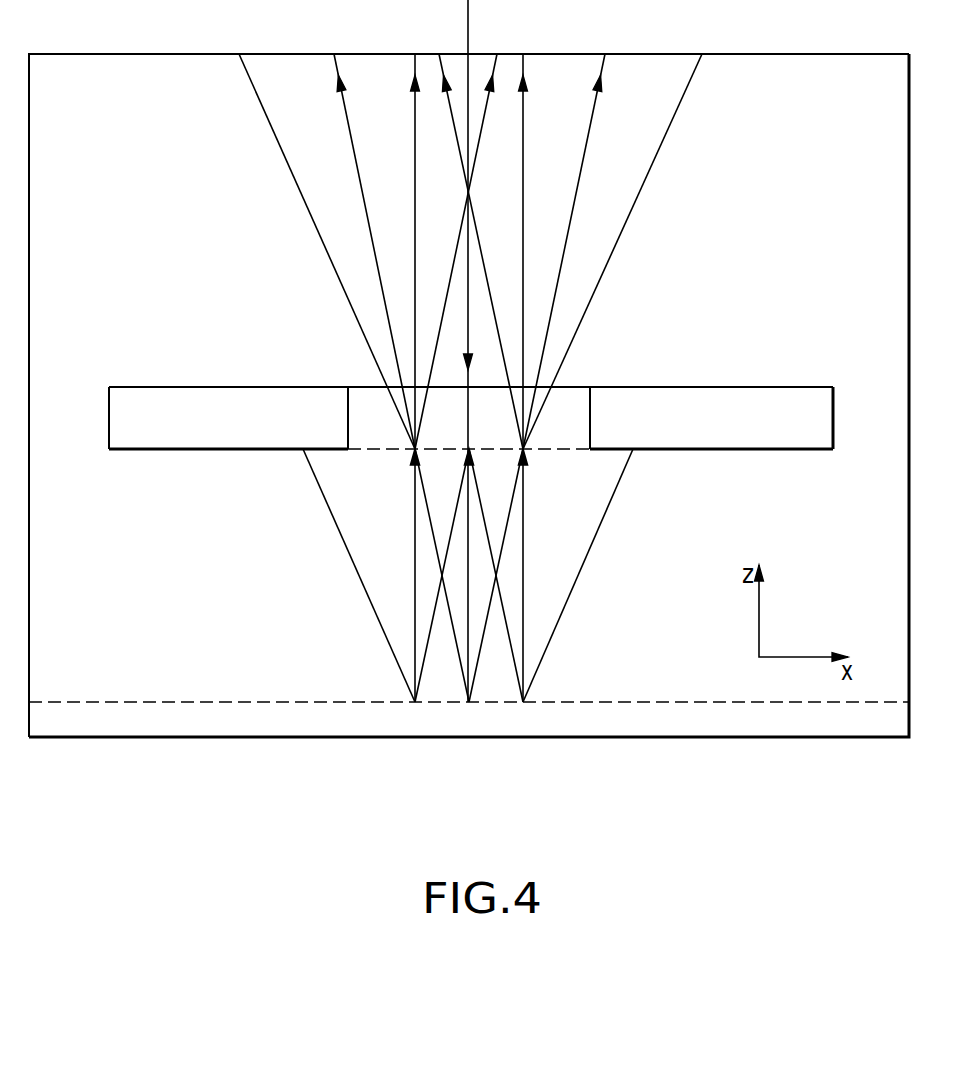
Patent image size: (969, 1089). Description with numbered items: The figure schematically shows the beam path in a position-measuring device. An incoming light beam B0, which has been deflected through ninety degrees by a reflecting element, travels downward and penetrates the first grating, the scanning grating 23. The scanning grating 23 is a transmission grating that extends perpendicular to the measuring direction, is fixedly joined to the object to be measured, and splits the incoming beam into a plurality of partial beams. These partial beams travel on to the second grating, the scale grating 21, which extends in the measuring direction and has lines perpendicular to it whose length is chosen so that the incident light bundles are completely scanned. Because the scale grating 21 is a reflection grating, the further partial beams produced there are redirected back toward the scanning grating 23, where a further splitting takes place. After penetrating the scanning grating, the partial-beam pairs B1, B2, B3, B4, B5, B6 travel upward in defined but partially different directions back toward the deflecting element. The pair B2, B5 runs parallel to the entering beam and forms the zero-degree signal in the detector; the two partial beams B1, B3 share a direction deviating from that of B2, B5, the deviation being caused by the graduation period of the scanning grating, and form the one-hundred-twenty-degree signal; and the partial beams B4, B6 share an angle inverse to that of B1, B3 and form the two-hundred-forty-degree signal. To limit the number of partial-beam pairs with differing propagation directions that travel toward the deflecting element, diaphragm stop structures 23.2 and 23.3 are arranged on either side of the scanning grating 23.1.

The scale grating 21 is at (469, 720).
The scanning grating 23 is at (471, 438).
The scanning grating 23.1 is at (469, 418).
The diaphragm stop structure 23.2 is at (228, 418).
The diaphragm stop structure 23.3 is at (711, 418).
The light beam B0 is at (468, 339).
The partial beam B1 is at (367, 232).
The partial beam B2 is at (410, 232).
The partial beam B3 is at (477, 232).
The partial beam B4 is at (462, 232).
The partial beam B5 is at (529, 232).
The partial beam B6 is at (570, 232).